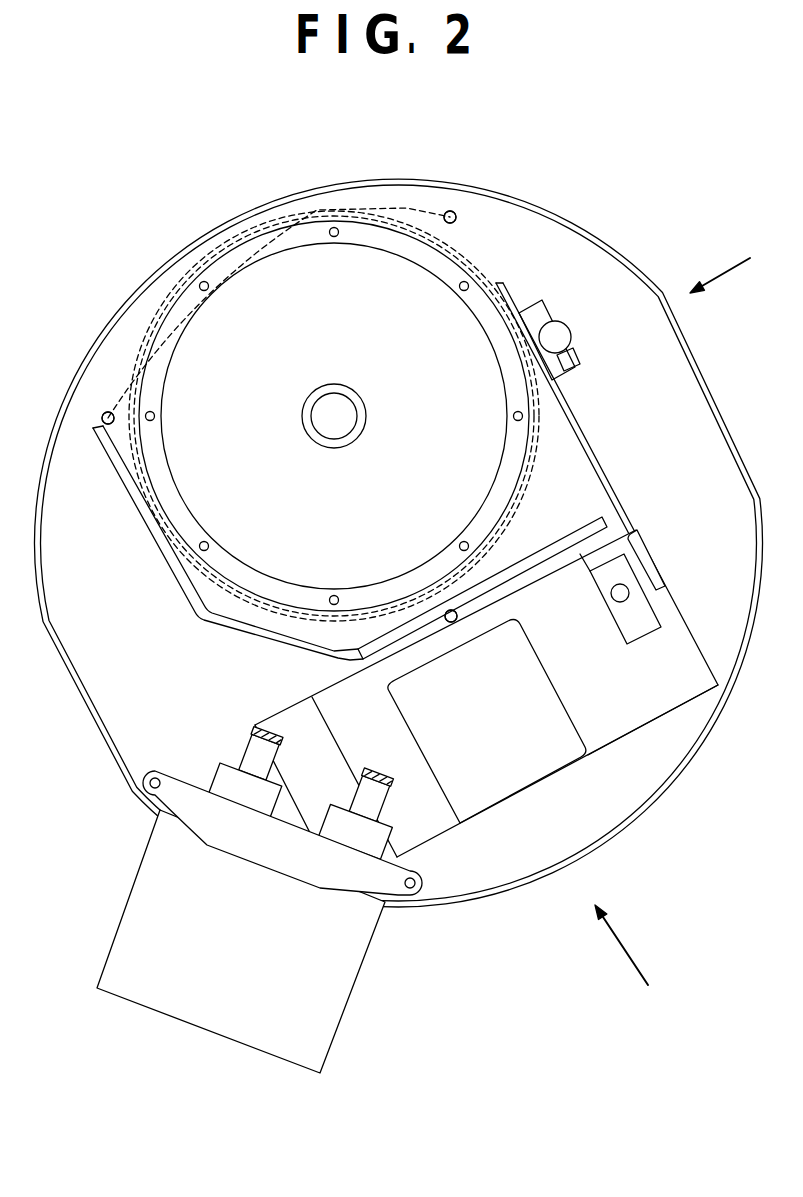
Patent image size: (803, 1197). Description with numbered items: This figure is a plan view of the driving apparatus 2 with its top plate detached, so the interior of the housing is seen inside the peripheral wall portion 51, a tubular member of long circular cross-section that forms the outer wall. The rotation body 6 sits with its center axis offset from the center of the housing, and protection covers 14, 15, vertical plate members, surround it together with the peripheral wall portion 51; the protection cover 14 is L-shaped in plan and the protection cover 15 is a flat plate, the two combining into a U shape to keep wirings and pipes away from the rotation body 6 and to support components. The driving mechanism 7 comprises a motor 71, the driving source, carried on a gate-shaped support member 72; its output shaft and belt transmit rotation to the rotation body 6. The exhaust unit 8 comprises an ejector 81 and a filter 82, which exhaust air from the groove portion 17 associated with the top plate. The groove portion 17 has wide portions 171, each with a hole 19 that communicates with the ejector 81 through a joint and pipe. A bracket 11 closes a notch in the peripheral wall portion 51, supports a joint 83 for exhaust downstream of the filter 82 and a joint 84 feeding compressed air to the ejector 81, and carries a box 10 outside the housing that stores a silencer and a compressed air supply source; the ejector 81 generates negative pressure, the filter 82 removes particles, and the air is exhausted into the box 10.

The driving apparatus 2 is at (121, 177).
The rotation body 6 is at (261, 243).
The groove portion 17 is at (317, 213).
The hole 19 is at (444, 210).
The wide portion 171 is at (456, 214).
The peripheral wall portion 51 is at (585, 233).
The ejector 81 is at (571, 328).
The exhaust unit 8 is at (620, 346).
The protection cover 15 is at (593, 450).
The protection cover 14 is at (163, 563).
The filter 82 is at (653, 603).
The joint 84 is at (243, 750).
The bracket 11 is at (184, 778).
The joint 83 is at (352, 797).
The motor 71 is at (543, 770).
The support member 72 is at (627, 737).
The driving mechanism 7 is at (535, 827).
The box 10 is at (353, 993).